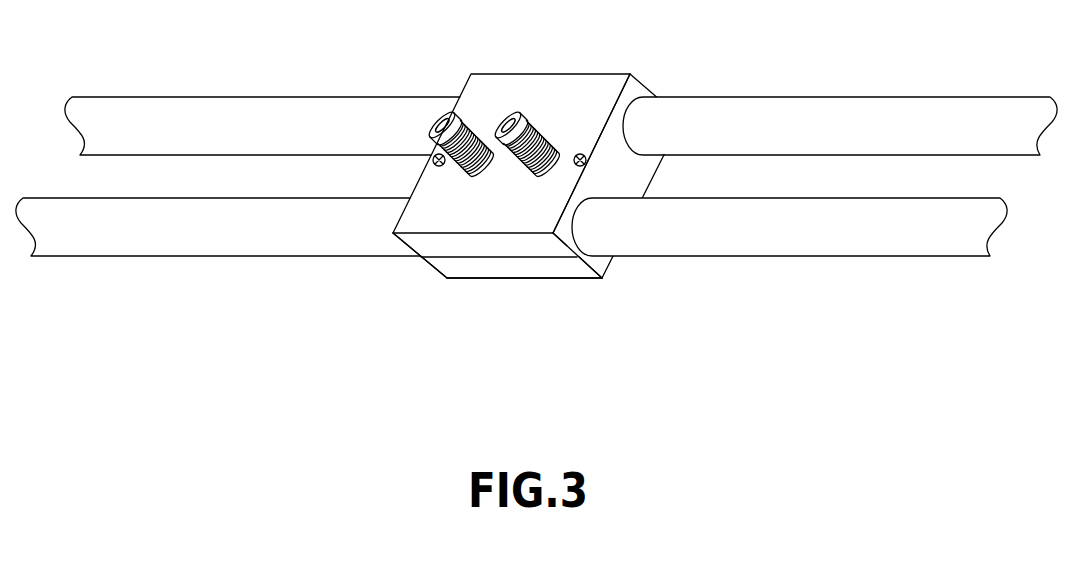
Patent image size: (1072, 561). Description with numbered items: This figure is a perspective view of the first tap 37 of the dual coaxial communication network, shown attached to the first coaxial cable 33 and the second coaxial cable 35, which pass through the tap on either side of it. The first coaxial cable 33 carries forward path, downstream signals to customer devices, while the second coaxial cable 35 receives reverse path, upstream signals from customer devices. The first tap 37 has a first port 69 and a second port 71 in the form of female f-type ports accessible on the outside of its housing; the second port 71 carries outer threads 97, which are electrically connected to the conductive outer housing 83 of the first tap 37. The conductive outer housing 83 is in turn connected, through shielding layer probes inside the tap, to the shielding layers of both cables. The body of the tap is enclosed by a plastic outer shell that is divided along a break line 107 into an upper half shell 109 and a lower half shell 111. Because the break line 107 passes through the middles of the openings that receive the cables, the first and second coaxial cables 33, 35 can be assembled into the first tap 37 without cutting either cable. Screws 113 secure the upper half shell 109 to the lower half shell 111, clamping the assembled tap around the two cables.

The first coaxial cable 33 is at (198, 243).
The second coaxial cable 35 is at (258, 108).
The first tap 37 is at (505, 88).
The first port 69 is at (558, 145).
The second port 71 is at (477, 177).
The conductive outer housing 83 is at (539, 108).
The outer threads 97 is at (473, 110).
The break line 107 is at (495, 253).
The upper half shell 109 is at (443, 245).
The lower half shell 111 is at (562, 268).
The screws 113 is at (432, 162).